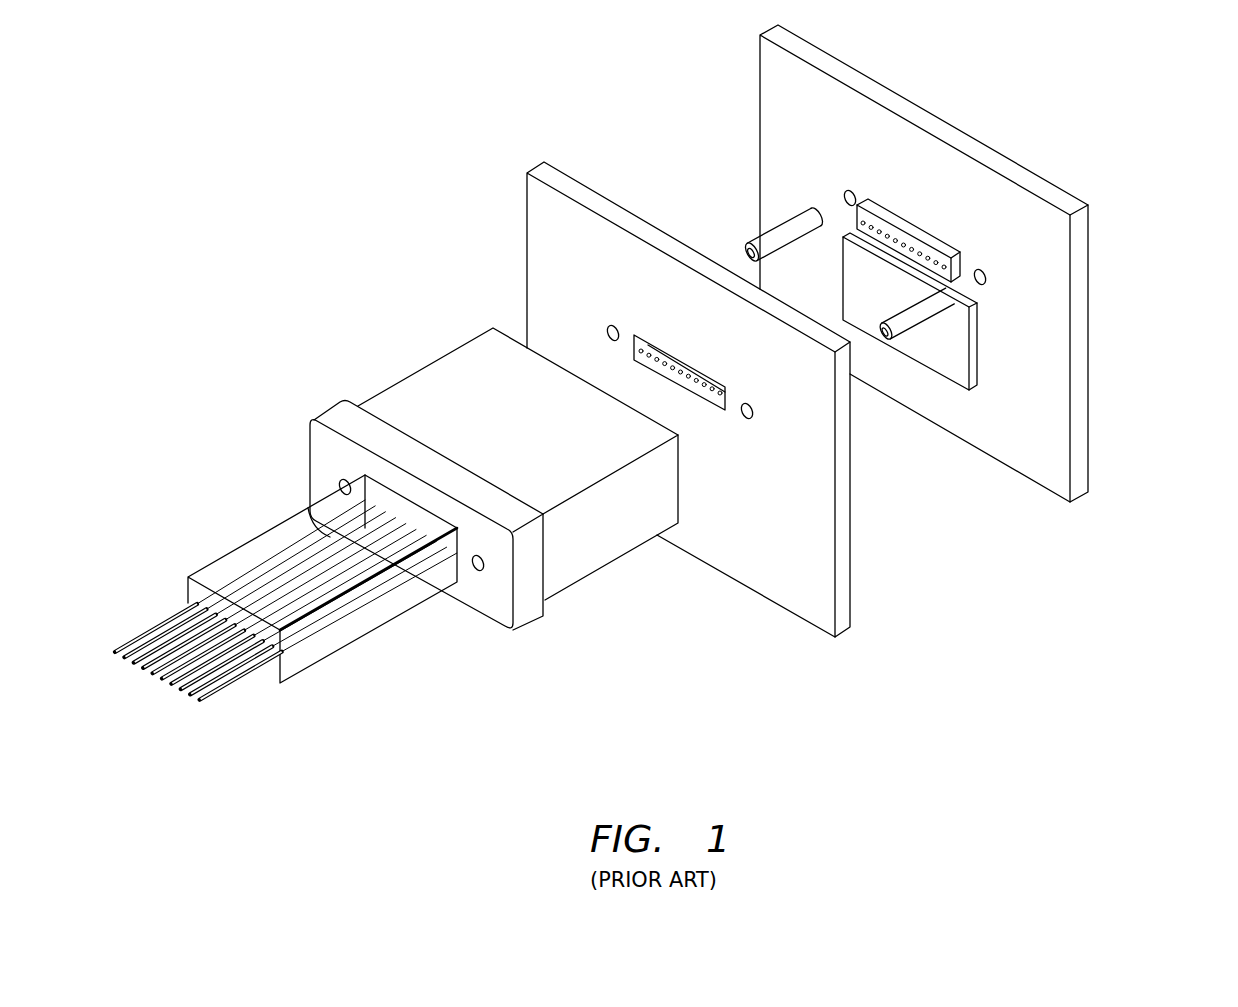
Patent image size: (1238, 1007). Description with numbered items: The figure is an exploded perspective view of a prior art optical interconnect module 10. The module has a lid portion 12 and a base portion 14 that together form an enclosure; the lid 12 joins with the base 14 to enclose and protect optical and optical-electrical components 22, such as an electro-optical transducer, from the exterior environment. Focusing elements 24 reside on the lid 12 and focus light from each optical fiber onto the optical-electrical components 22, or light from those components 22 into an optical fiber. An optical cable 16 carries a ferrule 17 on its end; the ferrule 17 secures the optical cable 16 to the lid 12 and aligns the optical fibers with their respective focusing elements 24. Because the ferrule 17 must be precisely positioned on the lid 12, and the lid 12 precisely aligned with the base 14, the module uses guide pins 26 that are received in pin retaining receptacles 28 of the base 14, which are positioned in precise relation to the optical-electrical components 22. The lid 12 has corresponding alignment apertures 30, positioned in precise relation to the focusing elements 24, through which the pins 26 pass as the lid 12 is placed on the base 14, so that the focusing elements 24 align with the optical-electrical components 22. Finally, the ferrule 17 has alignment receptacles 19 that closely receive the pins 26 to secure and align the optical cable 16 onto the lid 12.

The optical interconnect module 10 is at (1146, 430).
The lid portion 12 is at (840, 490).
The base portion 14 is at (1080, 257).
The optical cable 16 is at (357, 632).
The ferrule 17 is at (577, 552).
The alignment receptacles 19 is at (480, 572).
The optical-electrical components 22 is at (923, 240).
The focusing elements 24 is at (726, 412).
The guide pins 26 is at (903, 327).
The pin retaining receptacles 28 is at (987, 283).
The alignment apertures 30 is at (752, 421).